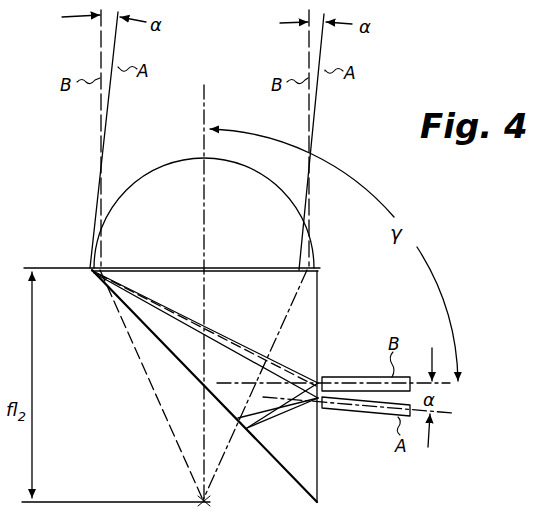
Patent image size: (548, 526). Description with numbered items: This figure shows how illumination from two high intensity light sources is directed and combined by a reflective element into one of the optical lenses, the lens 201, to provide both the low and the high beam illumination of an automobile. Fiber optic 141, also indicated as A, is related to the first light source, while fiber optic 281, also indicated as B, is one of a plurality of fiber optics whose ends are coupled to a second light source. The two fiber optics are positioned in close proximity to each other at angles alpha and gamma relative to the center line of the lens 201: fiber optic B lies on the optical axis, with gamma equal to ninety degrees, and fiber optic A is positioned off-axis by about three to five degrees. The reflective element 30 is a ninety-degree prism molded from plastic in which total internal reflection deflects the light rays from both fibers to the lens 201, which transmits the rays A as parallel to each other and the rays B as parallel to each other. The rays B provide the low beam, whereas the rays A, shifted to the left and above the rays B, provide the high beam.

The optical lens 201 is at (157, 174).
The reflective element 30 is at (138, 355).
The fiber optic 281 is at (352, 377).
The fiber optic 141 is at (358, 410).